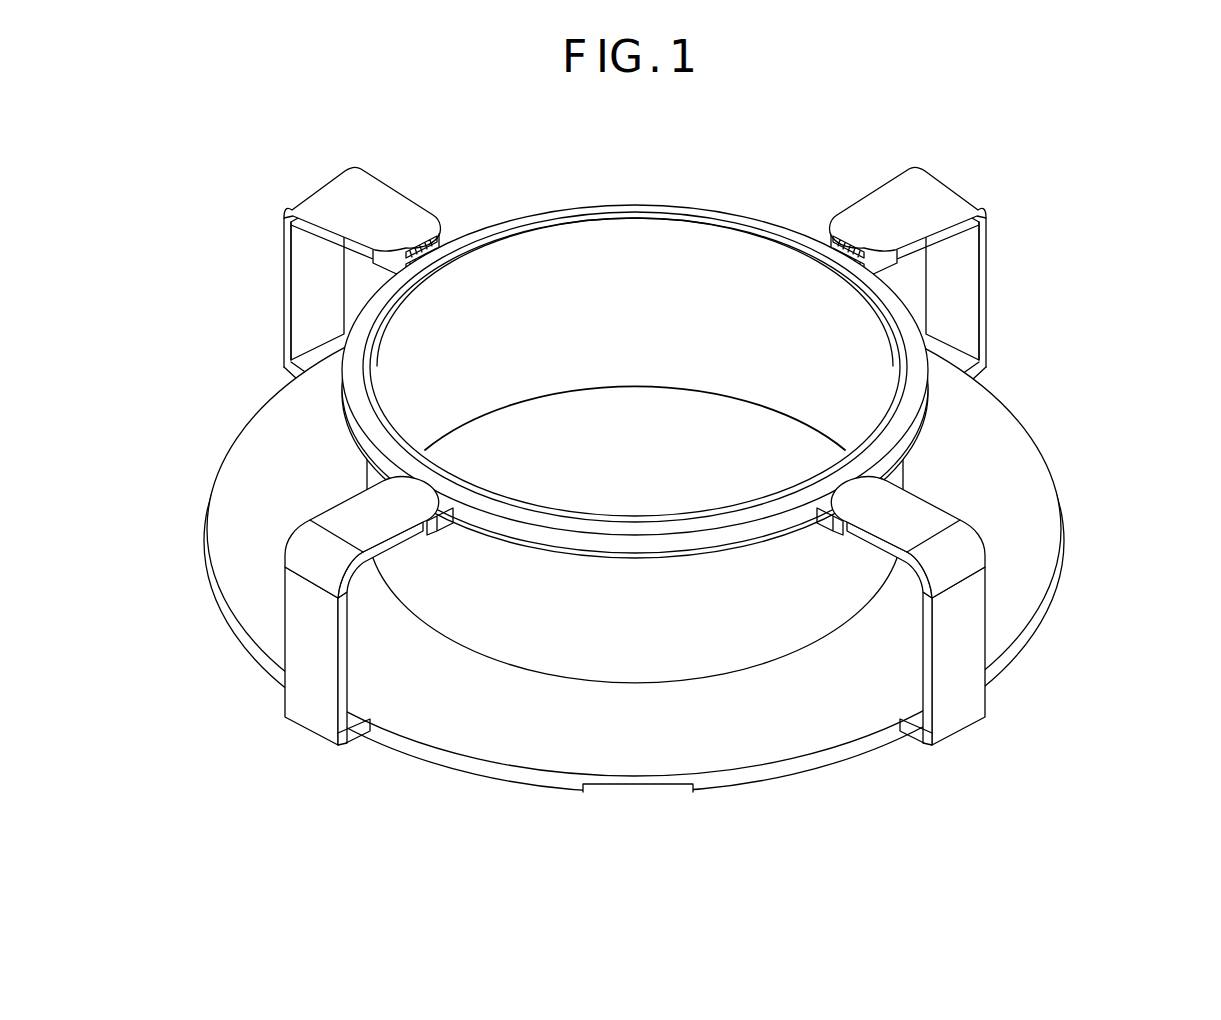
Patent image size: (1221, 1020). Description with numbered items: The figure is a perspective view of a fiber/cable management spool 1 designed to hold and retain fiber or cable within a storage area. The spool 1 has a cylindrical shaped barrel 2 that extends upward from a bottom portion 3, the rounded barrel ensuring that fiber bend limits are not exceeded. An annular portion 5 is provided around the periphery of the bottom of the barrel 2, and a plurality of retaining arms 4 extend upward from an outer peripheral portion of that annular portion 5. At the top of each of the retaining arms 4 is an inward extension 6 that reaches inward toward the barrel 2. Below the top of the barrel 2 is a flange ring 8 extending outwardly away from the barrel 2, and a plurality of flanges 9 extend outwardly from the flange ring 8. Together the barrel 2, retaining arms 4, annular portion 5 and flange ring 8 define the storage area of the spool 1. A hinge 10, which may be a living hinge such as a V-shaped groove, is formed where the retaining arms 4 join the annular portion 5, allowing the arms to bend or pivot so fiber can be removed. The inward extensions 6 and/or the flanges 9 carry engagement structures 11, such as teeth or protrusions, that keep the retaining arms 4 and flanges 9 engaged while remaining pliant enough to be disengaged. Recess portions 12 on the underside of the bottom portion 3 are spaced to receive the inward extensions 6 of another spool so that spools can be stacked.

The fiber/cable management spool 1 is at (1075, 152).
The barrel 2 is at (620, 613).
The bottom portion 3 is at (672, 537).
The retaining arms 4 is at (975, 258).
The annular portion 5 is at (1033, 560).
The inward extensions 6 is at (893, 205).
The flange ring 8 is at (363, 425).
The flanges 9 is at (445, 527).
The hinge 10 is at (372, 742).
The engagement structures 11 is at (447, 222).
The recess portions 12 is at (620, 793).